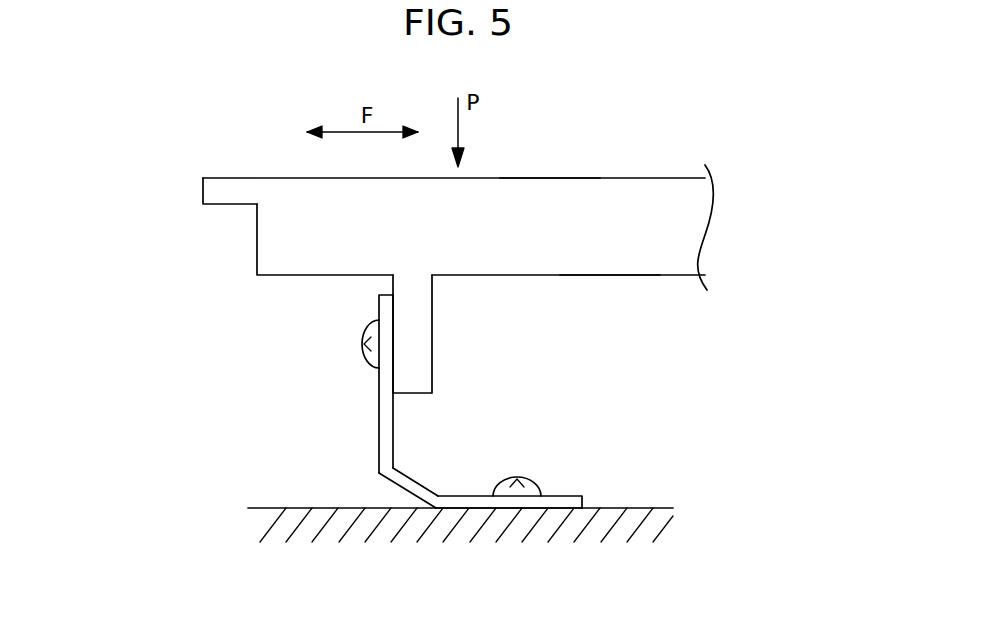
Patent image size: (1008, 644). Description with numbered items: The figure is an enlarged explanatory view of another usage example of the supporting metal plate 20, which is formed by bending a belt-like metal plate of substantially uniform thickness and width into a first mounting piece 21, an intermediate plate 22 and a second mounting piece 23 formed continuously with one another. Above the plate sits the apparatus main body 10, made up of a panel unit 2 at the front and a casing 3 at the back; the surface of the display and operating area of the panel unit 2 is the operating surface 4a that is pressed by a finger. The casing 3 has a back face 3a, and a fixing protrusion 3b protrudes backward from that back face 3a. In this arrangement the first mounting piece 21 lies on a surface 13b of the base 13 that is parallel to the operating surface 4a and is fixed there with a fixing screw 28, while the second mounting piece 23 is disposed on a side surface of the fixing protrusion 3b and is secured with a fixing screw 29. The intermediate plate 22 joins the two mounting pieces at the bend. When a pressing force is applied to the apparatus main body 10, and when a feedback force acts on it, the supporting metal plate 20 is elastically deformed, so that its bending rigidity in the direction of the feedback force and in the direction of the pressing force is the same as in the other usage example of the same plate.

The panel unit 2 is at (235, 190).
The casing 3 is at (270, 247).
The back face 3a is at (605, 275).
The fixing protrusion 3b is at (417, 333).
The operating surface 4a is at (548, 178).
The apparatus main body 10 is at (626, 170).
The base 13 is at (465, 479).
The surface of the base 13b is at (620, 508).
The supporting metal plate 20 is at (433, 462).
The first mounting piece 21 is at (518, 503).
The intermediate plate 22 is at (407, 485).
The second mounting piece 23 is at (384, 413).
The fixing screw 28 is at (520, 478).
The fixing screw 29 is at (362, 339).